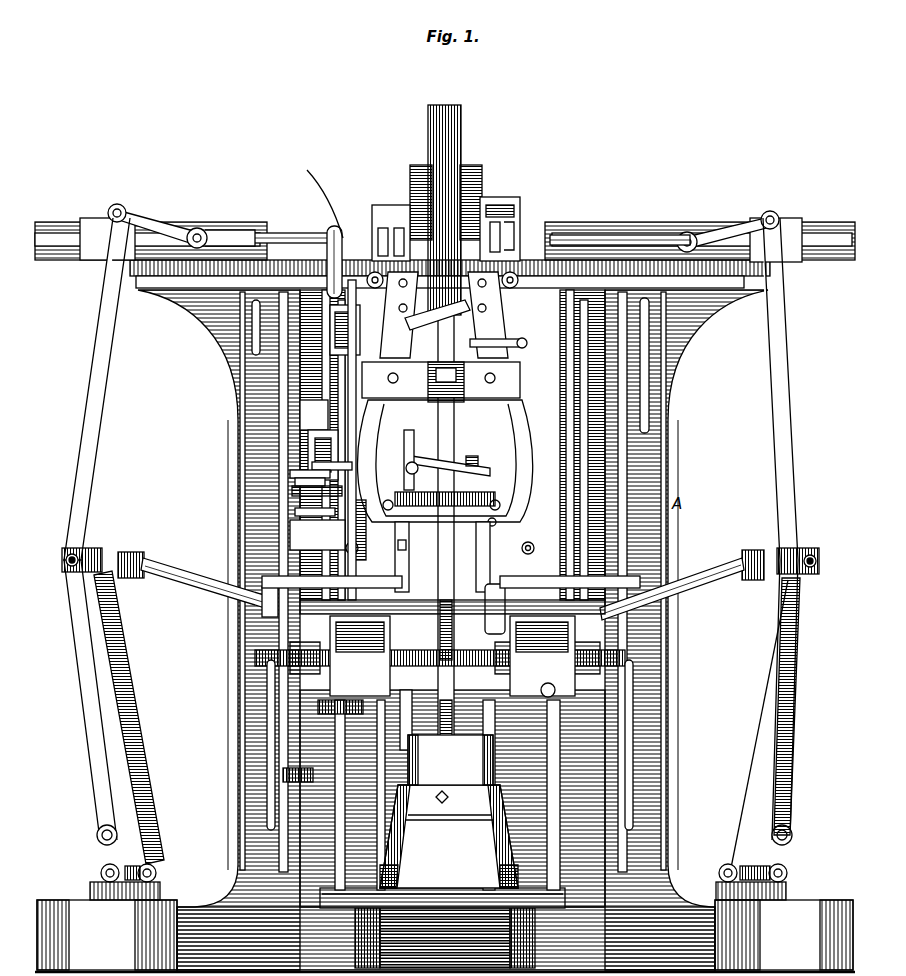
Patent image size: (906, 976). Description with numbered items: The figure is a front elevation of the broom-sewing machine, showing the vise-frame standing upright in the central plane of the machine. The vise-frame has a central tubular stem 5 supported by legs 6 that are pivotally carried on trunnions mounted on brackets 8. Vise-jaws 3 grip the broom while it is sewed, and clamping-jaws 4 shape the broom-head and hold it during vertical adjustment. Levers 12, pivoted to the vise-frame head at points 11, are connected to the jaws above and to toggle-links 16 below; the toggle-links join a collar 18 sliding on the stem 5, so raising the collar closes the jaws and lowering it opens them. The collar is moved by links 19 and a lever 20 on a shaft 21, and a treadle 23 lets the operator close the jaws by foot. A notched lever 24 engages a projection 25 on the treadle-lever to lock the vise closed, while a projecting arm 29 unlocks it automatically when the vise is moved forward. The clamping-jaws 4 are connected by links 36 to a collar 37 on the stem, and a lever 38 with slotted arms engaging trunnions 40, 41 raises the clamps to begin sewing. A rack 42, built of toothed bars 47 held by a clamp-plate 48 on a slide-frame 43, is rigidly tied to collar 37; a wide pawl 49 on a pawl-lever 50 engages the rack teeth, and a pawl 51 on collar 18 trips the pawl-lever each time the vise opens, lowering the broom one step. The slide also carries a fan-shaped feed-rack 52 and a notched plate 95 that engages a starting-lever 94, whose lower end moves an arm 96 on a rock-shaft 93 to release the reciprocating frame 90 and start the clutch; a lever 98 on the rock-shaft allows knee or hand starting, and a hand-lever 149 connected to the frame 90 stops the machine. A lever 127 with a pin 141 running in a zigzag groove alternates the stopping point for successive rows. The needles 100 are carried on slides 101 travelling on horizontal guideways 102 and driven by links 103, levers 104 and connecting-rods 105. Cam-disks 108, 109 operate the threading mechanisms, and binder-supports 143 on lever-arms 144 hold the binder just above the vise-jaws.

The vise-jaws 3 is at (503, 224).
The clamping-jaws 4 is at (456, 312).
The central tubular stem 5 is at (444, 442).
The legs 6 is at (350, 553).
The brackets 8 is at (449, 864).
The pivot points 11 is at (398, 382).
The levers 12 is at (402, 348).
The toggle-links 16 is at (462, 495).
The collar 18 is at (494, 522).
The links 19 is at (485, 565).
The lever 20 is at (487, 810).
The shaft 21 is at (385, 700).
The treadle 23 is at (563, 903).
The notched lever 24 is at (655, 722).
The projection 25 is at (565, 698).
The projecting arm 29 is at (637, 573).
The links 36 is at (475, 427).
The collar 37 is at (473, 470).
The lever 38 is at (410, 470).
The trunnion 40 is at (470, 460).
The trunnion 41 is at (404, 445).
The rack 42 is at (293, 513).
The slide-frame 43 is at (300, 465).
The bars 47 is at (293, 492).
The clamp-plate 48 is at (300, 415).
The wide pawl 49 is at (293, 479).
The pawl-lever 50 is at (330, 520).
The pawl 51 is at (409, 557).
The feed-rack 52 is at (300, 360).
The reciprocating frame 90 is at (423, 700).
The rock-shaft 93 is at (346, 711).
The starting-lever 94 is at (287, 510).
The notched plate 95 is at (293, 377).
The arm 96 is at (283, 772).
The lever 98 is at (494, 592).
The needles 100 is at (272, 236).
The slides 101 is at (182, 224).
The guideways 102 is at (352, 230).
The links 103 is at (156, 212).
The levers 104 is at (100, 413).
The connecting-rods 105 is at (203, 593).
The cam-disk 108 is at (412, 173).
The cam-disk 109 is at (480, 173).
The lever 127 is at (290, 476).
The pin 141 is at (309, 194).
The binder-supports 143 is at (400, 226).
The lever-arms 144 is at (447, 352).
The hand-lever 149 is at (300, 445).